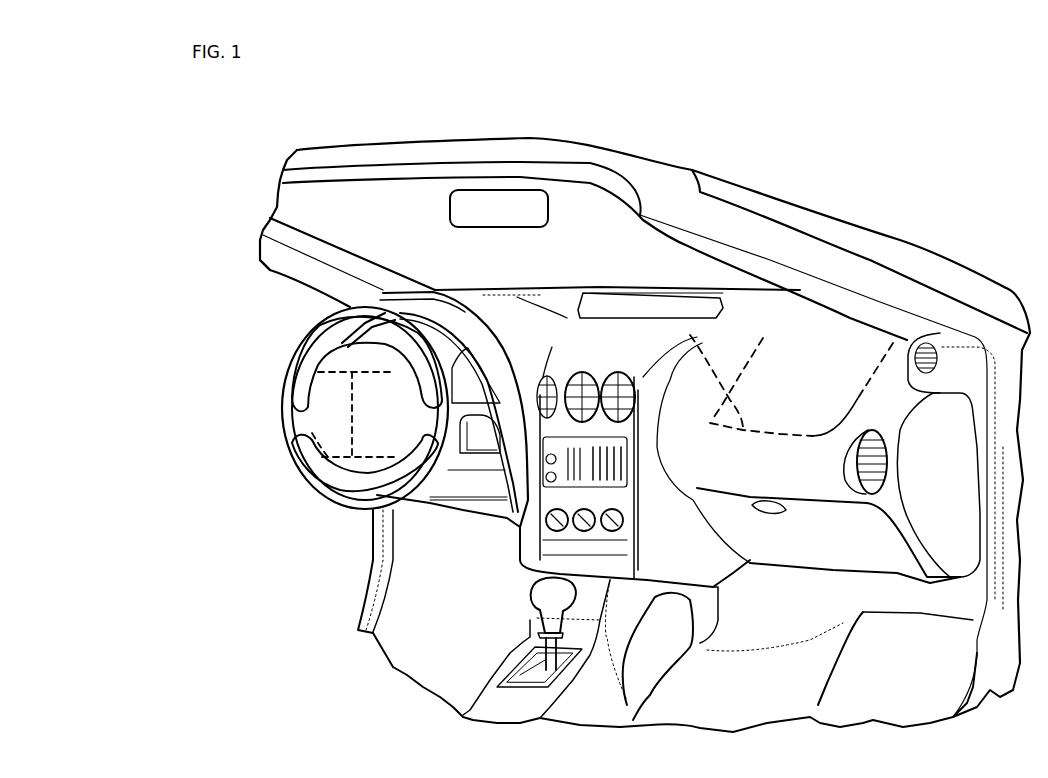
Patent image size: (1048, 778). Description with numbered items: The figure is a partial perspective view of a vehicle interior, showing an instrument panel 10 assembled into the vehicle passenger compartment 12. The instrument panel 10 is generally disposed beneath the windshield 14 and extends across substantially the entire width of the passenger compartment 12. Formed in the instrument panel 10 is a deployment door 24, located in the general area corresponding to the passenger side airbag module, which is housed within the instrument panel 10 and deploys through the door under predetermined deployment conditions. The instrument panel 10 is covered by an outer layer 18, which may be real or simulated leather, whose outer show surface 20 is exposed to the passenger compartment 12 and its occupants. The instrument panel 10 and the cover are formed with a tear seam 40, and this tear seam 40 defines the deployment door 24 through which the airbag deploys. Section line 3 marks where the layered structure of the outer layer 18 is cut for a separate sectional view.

The instrument panel 10 is at (755, 300).
The vehicle passenger compartment 12 is at (305, 566).
The windshield 14 is at (583, 207).
The outer layer 18 is at (722, 338).
The outer show surface 20 is at (776, 481).
The deployment door 24 is at (807, 380).
The tear seam 40 is at (285, 432).
The section line 3- 3 is at (800, 402).